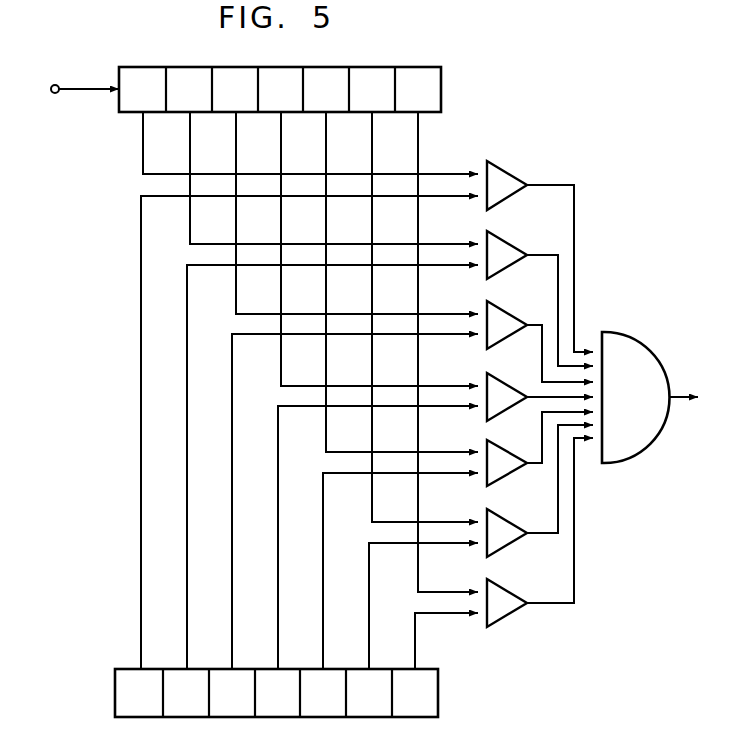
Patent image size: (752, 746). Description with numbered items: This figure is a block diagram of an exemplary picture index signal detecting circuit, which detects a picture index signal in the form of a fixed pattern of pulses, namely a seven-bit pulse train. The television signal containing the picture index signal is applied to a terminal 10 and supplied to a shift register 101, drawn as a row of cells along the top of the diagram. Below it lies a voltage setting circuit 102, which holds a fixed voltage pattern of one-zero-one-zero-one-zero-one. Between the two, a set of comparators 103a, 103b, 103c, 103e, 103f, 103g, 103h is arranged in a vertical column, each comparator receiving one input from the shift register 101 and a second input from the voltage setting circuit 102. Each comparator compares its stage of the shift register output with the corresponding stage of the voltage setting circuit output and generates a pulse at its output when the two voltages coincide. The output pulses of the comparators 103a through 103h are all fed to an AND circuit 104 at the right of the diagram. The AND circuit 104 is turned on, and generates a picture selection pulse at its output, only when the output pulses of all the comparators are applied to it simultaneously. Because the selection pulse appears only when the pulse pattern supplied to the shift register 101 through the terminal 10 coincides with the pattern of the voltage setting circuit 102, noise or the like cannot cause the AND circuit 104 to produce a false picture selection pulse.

The terminal 10 is at (55, 85).
The shift register 101 is at (441, 95).
The voltage setting circuit 102 is at (436, 698).
The comparator 103a is at (515, 181).
The comparator 103b is at (515, 250).
The comparator 103c is at (515, 320).
The comparator 103e is at (515, 389).
The comparator 103f is at (513, 459).
The comparator 103g is at (515, 529).
The comparator 103h is at (515, 597).
The AND circuit 104 is at (637, 346).